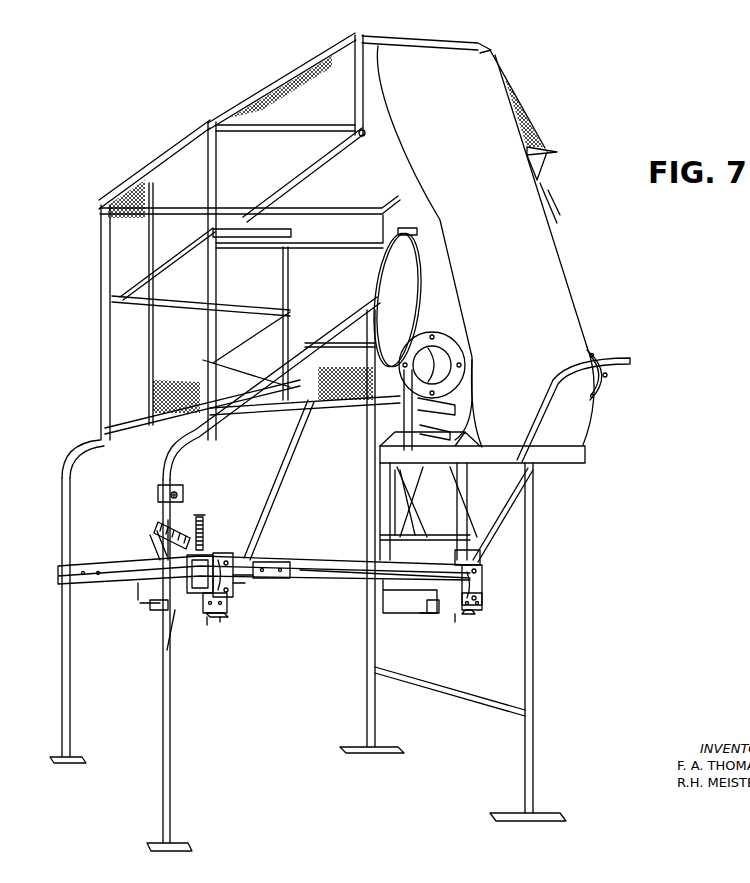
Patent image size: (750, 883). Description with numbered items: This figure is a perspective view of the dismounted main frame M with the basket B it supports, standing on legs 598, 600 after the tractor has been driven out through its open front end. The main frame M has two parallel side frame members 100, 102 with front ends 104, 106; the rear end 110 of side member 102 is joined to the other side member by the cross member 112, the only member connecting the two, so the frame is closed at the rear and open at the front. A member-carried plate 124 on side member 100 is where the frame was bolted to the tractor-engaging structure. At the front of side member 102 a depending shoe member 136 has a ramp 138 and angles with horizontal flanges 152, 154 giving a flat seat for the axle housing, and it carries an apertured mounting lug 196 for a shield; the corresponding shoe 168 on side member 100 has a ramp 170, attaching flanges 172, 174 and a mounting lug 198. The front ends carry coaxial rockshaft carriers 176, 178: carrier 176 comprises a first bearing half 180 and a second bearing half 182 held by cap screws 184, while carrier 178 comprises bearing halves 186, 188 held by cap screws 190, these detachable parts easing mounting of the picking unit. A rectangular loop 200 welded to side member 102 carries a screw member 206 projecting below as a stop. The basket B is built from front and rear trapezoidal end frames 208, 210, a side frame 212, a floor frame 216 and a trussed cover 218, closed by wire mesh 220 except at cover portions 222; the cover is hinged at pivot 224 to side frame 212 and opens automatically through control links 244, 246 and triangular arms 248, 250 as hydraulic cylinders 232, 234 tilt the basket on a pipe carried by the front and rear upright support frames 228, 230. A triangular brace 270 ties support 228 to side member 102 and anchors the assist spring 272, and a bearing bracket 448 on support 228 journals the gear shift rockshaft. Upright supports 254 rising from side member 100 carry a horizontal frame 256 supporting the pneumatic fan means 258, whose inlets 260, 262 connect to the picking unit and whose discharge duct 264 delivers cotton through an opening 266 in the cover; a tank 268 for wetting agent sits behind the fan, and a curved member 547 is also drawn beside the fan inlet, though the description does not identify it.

The basket B is at (148, 160).
The main frame M is at (122, 592).
The side frame member 100 is at (333, 583).
The side frame member 102 is at (138, 583).
The front end 104 is at (455, 562).
The front end 106 is at (140, 603).
The rear end 110 is at (60, 572).
The cross member 112 is at (107, 555).
The member-carried plate 124 is at (270, 578).
The shoe member 136 is at (150, 603).
The ramp 138 is at (207, 625).
The horizontal flange 152 is at (167, 650).
The horizontal flange 154 is at (217, 618).
The shoe 168 is at (397, 604).
The ramp 170 is at (456, 622).
The attaching flange 172 is at (427, 624).
The attaching flange 174 is at (470, 613).
The rockshaft carrier 176 is at (495, 583).
The rockshaft carrier 178 is at (233, 590).
The first bearing half 180 is at (438, 610).
The second bearing half 182 is at (498, 577).
The cap screws 184 is at (487, 565).
The first bearing half 186 is at (205, 617).
The second bearing half 188 is at (230, 595).
The cap screws 190 is at (243, 565).
The mounting lug 196 is at (220, 622).
The mounting lug 198 is at (482, 597).
The rectangular loop 200 is at (187, 572).
The screw member 206 is at (203, 523).
The front end frame 208 is at (198, 193).
The rear end frame 210 is at (110, 332).
The side frame 212 is at (122, 423).
The floor frame 216 is at (323, 410).
The trussed cover 218 is at (273, 83).
The wire mesh 220 is at (107, 233).
The cover portions 222 is at (314, 52).
The pivot 224 is at (213, 128).
The front upright support frame 228 is at (163, 460).
The rear upright support frame 230 is at (82, 448).
The front hydraulic cylinder 232 is at (397, 498).
The rear hydraulic cylinder 234 is at (290, 452).
The front control link 244 is at (350, 247).
The rear control link 246 is at (177, 303).
The front arm 248 is at (297, 180).
The rear arm 250 is at (177, 253).
The upright supports 254 is at (383, 512).
The horizontal frame 256 is at (580, 460).
The pneumatic fan means 258 is at (573, 413).
The inlet 260 is at (440, 361).
The inlet 262 is at (612, 380).
The discharge duct 264 is at (548, 252).
The opening 266 is at (371, 52).
The tank 268 is at (387, 283).
The triangular brace 270 is at (162, 545).
The assist spring 272 is at (167, 530).
The bearing bracket 448 is at (170, 492).
The curved tube 547 is at (630, 361).
The leg 598 is at (168, 762).
The leg 600 is at (528, 750).